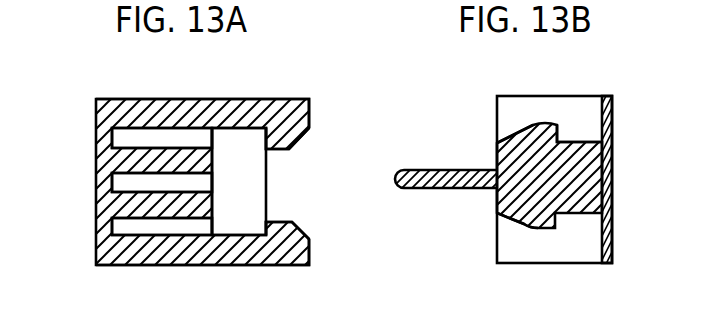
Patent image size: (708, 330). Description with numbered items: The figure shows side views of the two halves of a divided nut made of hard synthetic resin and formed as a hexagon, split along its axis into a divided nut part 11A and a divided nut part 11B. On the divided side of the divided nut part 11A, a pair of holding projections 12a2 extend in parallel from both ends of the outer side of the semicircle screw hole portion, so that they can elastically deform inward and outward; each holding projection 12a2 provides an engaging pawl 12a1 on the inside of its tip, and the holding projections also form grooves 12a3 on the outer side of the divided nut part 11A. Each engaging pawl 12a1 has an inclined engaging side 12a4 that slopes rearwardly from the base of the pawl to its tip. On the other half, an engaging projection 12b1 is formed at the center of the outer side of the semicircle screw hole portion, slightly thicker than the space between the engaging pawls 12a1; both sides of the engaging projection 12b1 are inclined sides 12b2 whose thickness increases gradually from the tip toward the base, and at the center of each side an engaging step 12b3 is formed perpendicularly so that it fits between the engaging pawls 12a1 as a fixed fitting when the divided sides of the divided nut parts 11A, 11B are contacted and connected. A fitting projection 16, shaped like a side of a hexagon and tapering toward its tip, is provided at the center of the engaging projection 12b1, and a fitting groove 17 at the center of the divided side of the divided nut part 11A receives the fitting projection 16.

In FIG. 13A, the divided nut part 11A is at (96, 203).
In FIG. 13B, the divided nut part 11B is at (613, 175).
In FIG. 13A, the engaging pawl 12a1 is at (299, 135).
In FIG. 13A, the holding projection 12a2 is at (238, 108).
In FIG. 13A, the groove 12a3 is at (150, 138).
In FIG. 13A, the inclined engaging side 12a4 is at (267, 224).
In FIG. 13B, the engaging projection 12b1 is at (573, 200).
In FIG. 13B, the inclined side 12b2 is at (515, 135).
In FIG. 13B, the engaging step 12b3 is at (563, 130).
In FIG. 13B, the fitting projection 16 is at (455, 188).
In FIG. 13A, the fitting groove 17 is at (130, 178).